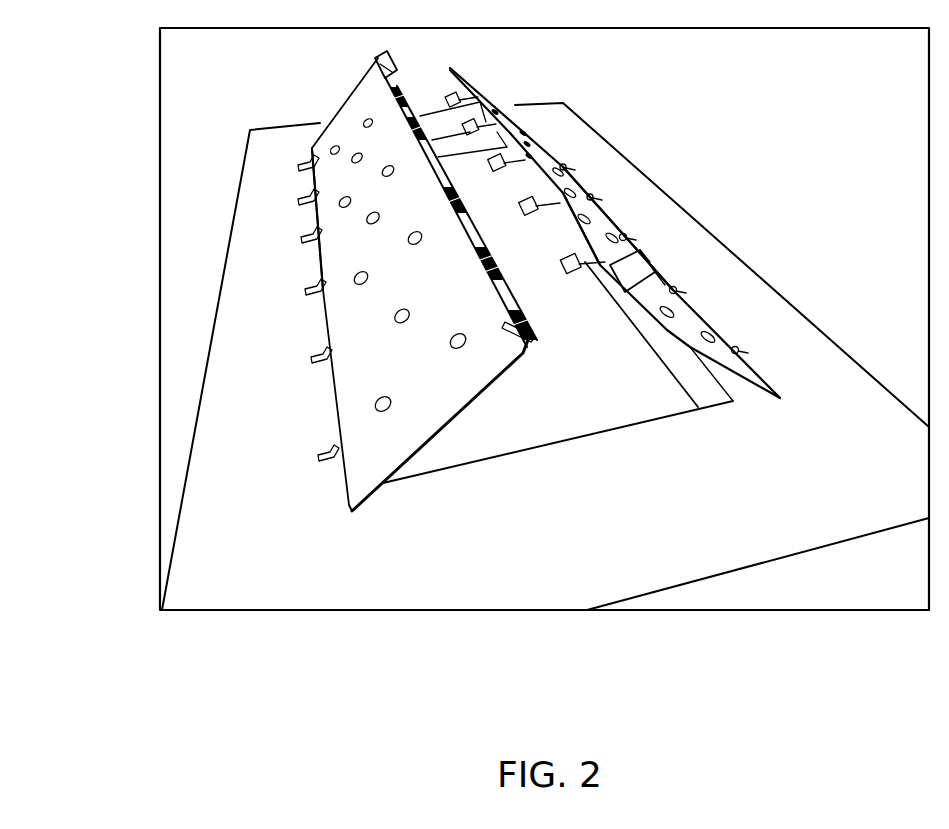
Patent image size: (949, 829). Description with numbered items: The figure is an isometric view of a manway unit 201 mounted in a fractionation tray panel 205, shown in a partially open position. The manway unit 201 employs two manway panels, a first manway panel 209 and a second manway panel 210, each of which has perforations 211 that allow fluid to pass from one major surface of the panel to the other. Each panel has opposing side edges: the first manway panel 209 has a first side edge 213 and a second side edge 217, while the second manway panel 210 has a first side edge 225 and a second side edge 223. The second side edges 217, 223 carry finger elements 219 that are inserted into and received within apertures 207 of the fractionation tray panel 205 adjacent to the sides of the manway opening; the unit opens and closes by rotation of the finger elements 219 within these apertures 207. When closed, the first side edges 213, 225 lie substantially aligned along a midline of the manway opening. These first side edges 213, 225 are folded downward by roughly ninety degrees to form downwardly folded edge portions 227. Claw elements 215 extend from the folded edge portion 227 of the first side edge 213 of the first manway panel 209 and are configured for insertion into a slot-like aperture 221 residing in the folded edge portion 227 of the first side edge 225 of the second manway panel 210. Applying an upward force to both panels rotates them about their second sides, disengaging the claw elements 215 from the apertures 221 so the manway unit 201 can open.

The manway unit 201 is at (226, 464).
The fractionation tray panel 205 is at (498, 332).
The apertures 207 is at (507, 409).
The first manway panel 209 is at (637, 174).
The second manway panel 210 is at (374, 284).
The perforations 211 is at (410, 241).
The first side edge of first manway panel 213 is at (615, 219).
The claw elements 215 is at (482, 108).
The second side edge of first manway panel 217 is at (691, 189).
The finger elements 219 is at (543, 444).
The aperture (slot) 221 is at (456, 46).
The second side edge of second manway panel 223 is at (185, 328).
The first side edge of second manway panel 225 is at (436, 490).
The downwardly folded edge portion 227 is at (610, 275).